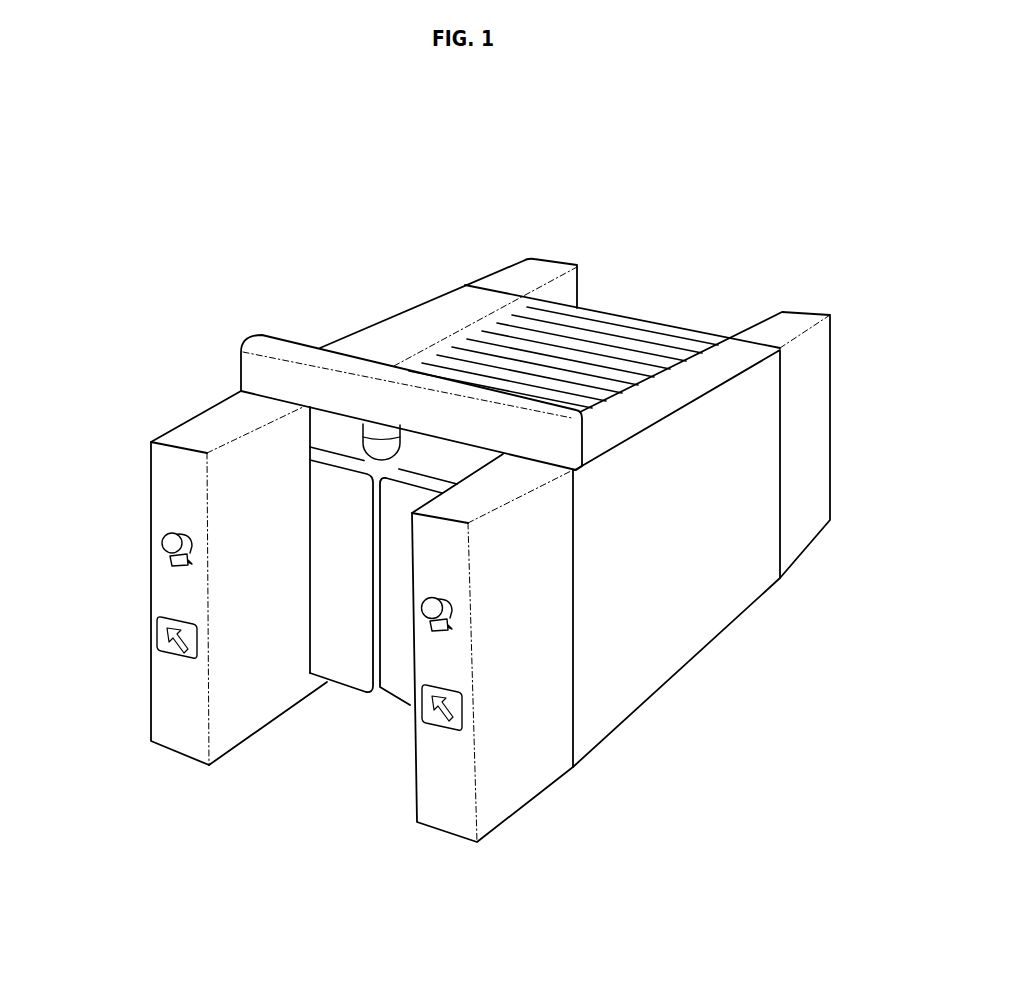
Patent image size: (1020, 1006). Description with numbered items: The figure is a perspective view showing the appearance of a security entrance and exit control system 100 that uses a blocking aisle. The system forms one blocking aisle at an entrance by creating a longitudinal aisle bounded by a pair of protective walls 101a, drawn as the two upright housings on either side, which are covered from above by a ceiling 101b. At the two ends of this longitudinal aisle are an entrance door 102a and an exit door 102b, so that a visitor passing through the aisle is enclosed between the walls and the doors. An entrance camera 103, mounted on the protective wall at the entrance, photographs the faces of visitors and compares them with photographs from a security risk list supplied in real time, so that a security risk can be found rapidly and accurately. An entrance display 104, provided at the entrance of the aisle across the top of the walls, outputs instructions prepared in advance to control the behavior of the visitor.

The security entrance and exit control system 100 is at (858, 135).
The protective wall 101a is at (728, 598).
The ceiling 101b is at (472, 345).
The entrance door 102a is at (348, 682).
The exit door 102b is at (648, 322).
The entrance camera 103 is at (162, 540).
The entrance display 104 is at (240, 348).